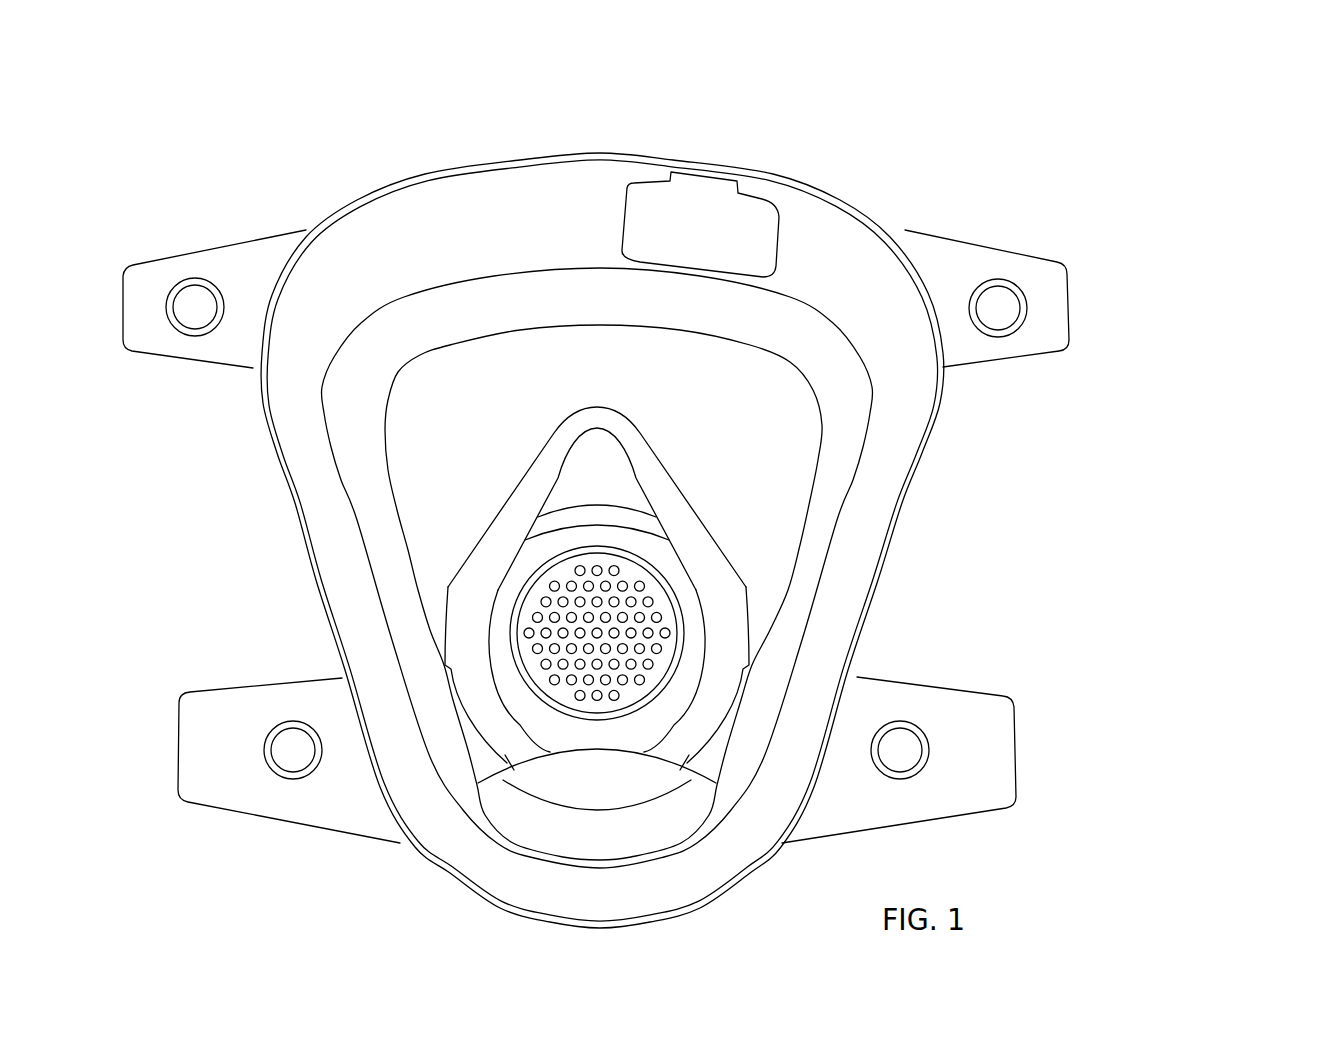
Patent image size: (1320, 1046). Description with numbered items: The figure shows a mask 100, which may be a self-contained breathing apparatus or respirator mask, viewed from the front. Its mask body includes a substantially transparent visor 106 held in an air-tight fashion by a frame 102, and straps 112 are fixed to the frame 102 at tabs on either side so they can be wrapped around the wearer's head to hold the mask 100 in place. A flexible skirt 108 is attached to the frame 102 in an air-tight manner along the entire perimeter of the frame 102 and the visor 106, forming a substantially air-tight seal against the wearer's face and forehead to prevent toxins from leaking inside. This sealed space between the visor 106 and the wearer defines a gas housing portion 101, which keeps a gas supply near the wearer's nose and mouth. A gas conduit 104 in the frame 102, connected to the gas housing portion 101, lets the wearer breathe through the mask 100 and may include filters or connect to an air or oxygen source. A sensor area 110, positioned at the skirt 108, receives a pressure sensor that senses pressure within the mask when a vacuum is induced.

The mask 100 is at (227, 162).
The gas housing portion 101 is at (443, 510).
The frame 102 is at (820, 502).
The gas conduit 104 is at (675, 625).
The visor 106 is at (472, 425).
The skirt 108 is at (888, 426).
The sensor area 110 is at (742, 194).
The straps 112 is at (1073, 310).